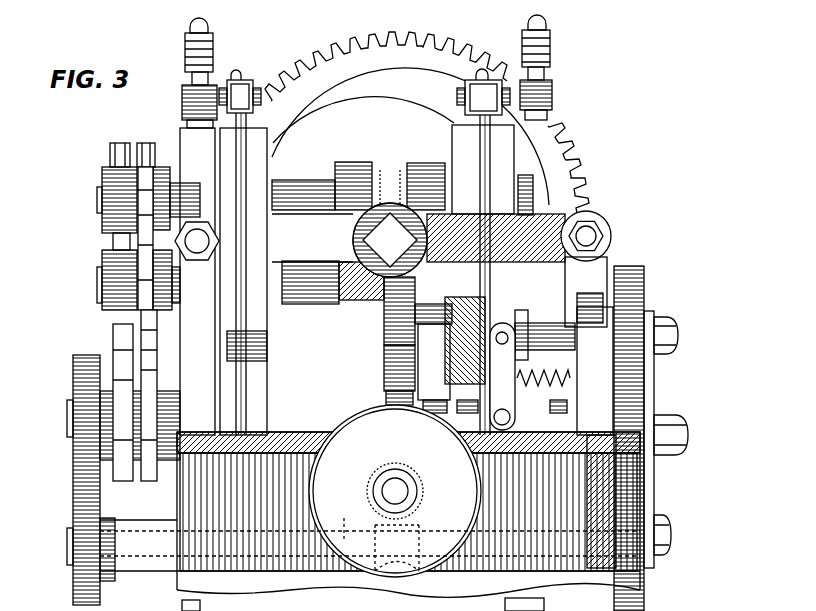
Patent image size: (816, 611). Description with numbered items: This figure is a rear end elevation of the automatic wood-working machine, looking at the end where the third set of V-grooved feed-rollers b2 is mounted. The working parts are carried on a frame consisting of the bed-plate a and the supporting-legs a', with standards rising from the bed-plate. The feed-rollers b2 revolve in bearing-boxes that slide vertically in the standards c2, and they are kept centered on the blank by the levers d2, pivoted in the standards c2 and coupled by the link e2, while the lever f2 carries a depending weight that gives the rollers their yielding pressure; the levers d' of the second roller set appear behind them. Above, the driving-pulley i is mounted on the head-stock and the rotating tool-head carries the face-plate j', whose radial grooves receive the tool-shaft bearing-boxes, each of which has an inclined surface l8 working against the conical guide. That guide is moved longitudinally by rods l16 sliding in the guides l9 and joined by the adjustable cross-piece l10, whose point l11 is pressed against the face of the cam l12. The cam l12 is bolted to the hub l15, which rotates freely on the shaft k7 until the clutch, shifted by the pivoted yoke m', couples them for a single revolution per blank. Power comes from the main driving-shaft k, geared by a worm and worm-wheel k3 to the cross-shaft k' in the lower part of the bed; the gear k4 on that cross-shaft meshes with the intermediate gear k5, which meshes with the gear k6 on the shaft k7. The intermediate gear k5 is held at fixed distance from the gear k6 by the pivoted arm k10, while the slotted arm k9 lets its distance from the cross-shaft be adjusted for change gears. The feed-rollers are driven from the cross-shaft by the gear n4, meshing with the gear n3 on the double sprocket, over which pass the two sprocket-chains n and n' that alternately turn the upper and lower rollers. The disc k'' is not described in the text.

The face-plate j' is at (427, 122).
The driving-pulley i is at (410, 136).
The levers d' is at (366, 71).
The levers d2 is at (240, 95).
The standards c2 is at (452, 142).
The guides l9 is at (197, 281).
The feed-rollers b2 is at (350, 167).
The cross-piece l10 is at (441, 240).
The lever f2 is at (247, 190).
The link e2 is at (250, 330).
The projection or point l11 is at (384, 335).
The cam l12 is at (384, 360).
The hub l15 is at (388, 393).
The rods l16 is at (433, 352).
The inclined surface l8 is at (470, 297).
The shaft k7 is at (538, 326).
The pivoted yoke m' is at (543, 390).
The intermediate gear k5 is at (645, 492).
The gear k6 is at (644, 296).
The pivoted arm k10 is at (654, 392).
The slotted arm k9 is at (668, 458).
The gear k4 is at (645, 605).
The bed-plate a is at (408, 521).
The supporting-legs a' is at (408, 598).
The disc k'' is at (395, 491).
The main driving-shaft k is at (409, 491).
The cross-shaft k' is at (370, 530).
The worm-wheel k3 is at (421, 527).
The gear n3 is at (85, 358).
The gear n4 is at (75, 603).
The sprocket-chain n is at (140, 449).
The sprocket-chain n' is at (157, 395).